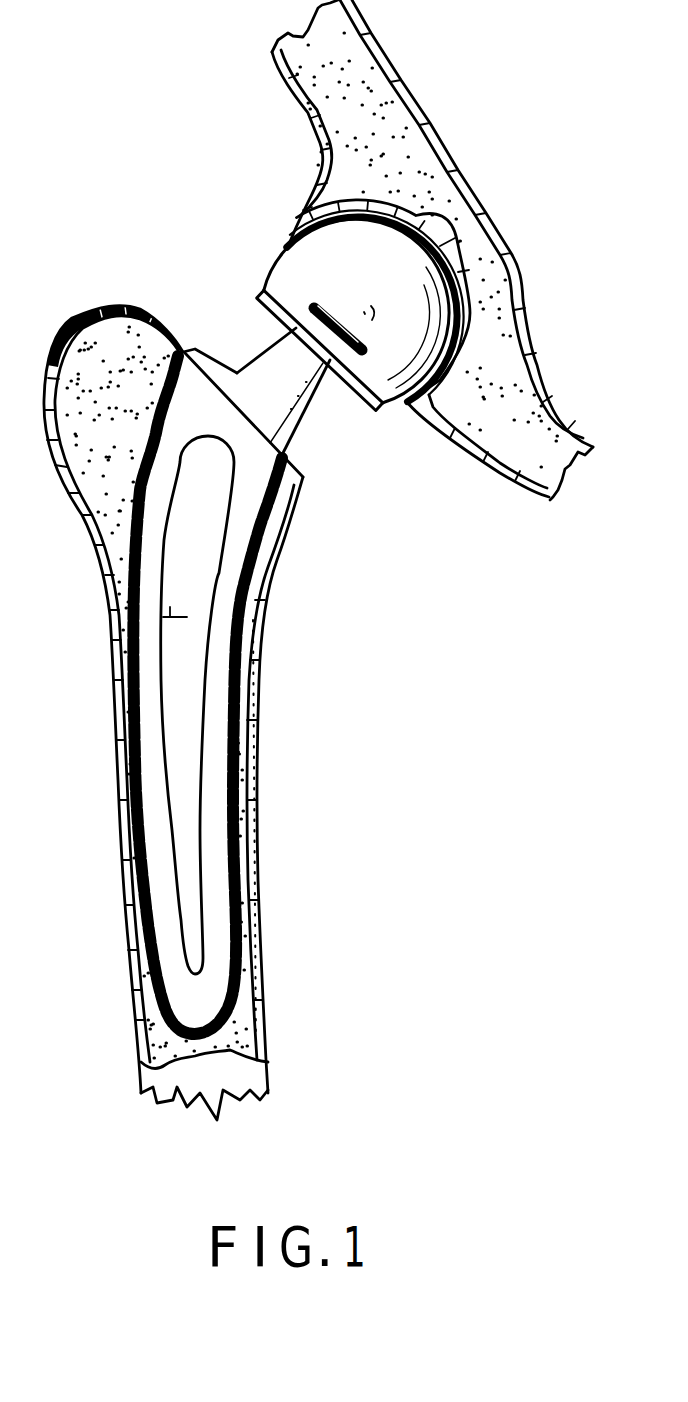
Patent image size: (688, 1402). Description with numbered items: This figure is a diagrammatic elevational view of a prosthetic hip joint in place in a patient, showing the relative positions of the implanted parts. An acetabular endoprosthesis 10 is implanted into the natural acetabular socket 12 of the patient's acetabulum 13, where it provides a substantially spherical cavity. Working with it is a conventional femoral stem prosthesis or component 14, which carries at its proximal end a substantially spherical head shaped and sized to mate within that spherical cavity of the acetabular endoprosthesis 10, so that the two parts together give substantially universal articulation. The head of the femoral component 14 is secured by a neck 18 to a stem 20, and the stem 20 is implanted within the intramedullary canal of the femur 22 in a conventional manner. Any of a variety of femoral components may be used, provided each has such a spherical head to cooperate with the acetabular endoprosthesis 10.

The acetabular endoprosthesis 10 is at (272, 248).
The natural acetabular socket 12 is at (438, 219).
The acetabulum 13 is at (377, 143).
The femoral stem prosthesis 14 is at (212, 689).
The neck 18 is at (299, 421).
The stem 20 is at (207, 802).
The femur 22 is at (257, 925).